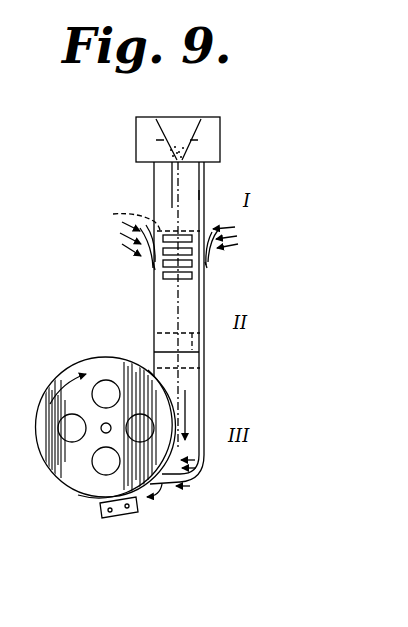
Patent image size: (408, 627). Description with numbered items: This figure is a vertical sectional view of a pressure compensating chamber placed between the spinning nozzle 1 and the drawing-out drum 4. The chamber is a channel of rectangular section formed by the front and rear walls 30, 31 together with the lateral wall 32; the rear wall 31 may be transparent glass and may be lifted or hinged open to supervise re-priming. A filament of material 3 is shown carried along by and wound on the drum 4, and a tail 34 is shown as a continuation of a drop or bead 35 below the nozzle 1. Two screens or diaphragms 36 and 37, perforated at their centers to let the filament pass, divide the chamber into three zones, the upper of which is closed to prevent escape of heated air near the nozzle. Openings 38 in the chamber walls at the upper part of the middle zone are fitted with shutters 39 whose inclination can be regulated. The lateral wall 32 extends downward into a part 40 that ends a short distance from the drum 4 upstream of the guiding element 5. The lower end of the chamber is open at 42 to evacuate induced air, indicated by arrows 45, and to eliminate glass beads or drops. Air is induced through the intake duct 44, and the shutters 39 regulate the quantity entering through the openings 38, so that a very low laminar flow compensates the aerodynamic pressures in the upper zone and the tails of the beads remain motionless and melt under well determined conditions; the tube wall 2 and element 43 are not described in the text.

The spinning nozzle 1 is at (211, 128).
The outer tube 2 is at (205, 168).
The filament of material 3 is at (200, 196).
The drawing-out drum 4 is at (46, 399).
The guiding element 5 is at (97, 502).
The front wall 30 is at (154, 322).
The rear wall 31 is at (199, 317).
The lateral wall 32 is at (197, 323).
The tail 34 is at (172, 192).
The drop or bead 35 is at (177, 161).
The screen or diaphragm 36 is at (144, 237).
The screen or diaphragm 37 is at (205, 363).
The openings 38 is at (165, 277).
The shutters 39 is at (150, 268).
The part of lateral wall 40 is at (204, 413).
The open lower part of chamber 42 is at (194, 470).
The outlet nozzle 43 is at (188, 485).
The intake duct 44 is at (163, 503).
The arrows 45 is at (235, 245).